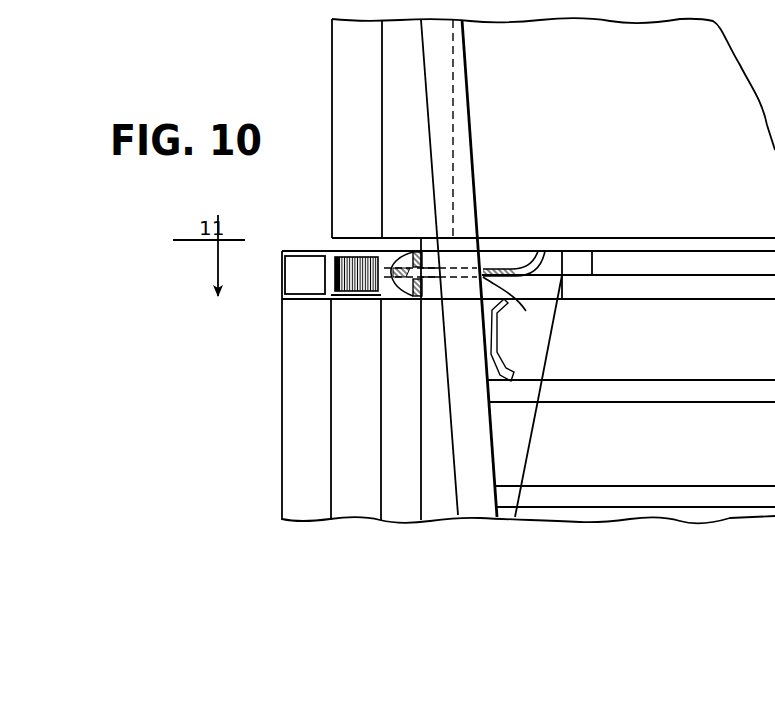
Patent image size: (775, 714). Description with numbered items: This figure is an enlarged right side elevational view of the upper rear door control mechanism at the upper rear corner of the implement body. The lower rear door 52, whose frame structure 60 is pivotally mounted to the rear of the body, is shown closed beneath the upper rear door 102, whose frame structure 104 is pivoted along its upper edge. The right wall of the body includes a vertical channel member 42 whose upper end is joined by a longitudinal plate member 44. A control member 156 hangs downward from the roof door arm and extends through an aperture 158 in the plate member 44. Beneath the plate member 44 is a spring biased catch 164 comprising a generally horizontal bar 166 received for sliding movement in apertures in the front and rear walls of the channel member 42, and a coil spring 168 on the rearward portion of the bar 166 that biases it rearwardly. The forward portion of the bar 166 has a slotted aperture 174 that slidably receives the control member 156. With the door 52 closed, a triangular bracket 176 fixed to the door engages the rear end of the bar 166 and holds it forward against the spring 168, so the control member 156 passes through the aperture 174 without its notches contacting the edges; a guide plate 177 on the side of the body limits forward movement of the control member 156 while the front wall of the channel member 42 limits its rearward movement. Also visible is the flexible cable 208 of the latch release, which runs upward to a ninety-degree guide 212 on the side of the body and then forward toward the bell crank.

The vertical channel member 42 is at (390, 342).
The longitudinal plate member 44 is at (703, 236).
The rear door 52 is at (280, 431).
The frame structure 60 is at (290, 372).
The rear door 102 is at (330, 107).
The frame structure 104 is at (338, 52).
The control member 156 is at (463, 134).
The aperture 158 is at (480, 246).
The spring biased catch 164 is at (543, 305).
The bar 166 is at (512, 270).
The coil spring 168 is at (357, 257).
The slotted aperture 174 is at (518, 306).
The triangular bracket 176 is at (305, 251).
The guide plate 177 is at (500, 348).
The flexible cable 208 is at (533, 421).
The 90° guide 212 is at (582, 267).